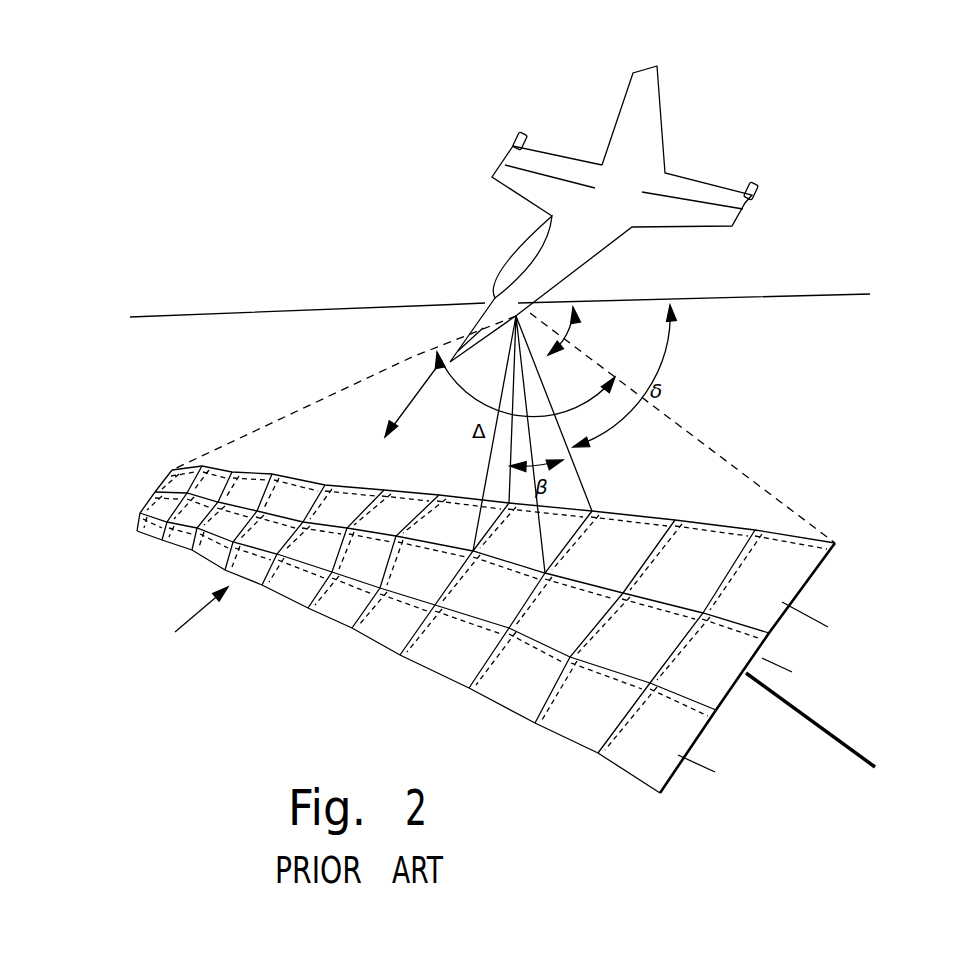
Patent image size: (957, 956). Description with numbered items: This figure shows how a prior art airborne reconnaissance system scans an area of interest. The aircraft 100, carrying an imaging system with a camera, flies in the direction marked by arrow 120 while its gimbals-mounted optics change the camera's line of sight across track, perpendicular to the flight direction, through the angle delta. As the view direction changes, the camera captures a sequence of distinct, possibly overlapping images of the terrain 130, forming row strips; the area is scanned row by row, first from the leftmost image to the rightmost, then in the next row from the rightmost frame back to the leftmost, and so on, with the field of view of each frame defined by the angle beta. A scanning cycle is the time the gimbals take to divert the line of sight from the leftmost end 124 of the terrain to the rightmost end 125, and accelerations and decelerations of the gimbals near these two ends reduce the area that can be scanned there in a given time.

The aircraft 100 is at (620, 97).
The arrow 120 is at (427, 386).
The leftmost end 124 is at (851, 752).
The rightmost end 125 is at (155, 492).
The terrain 130 is at (186, 624).